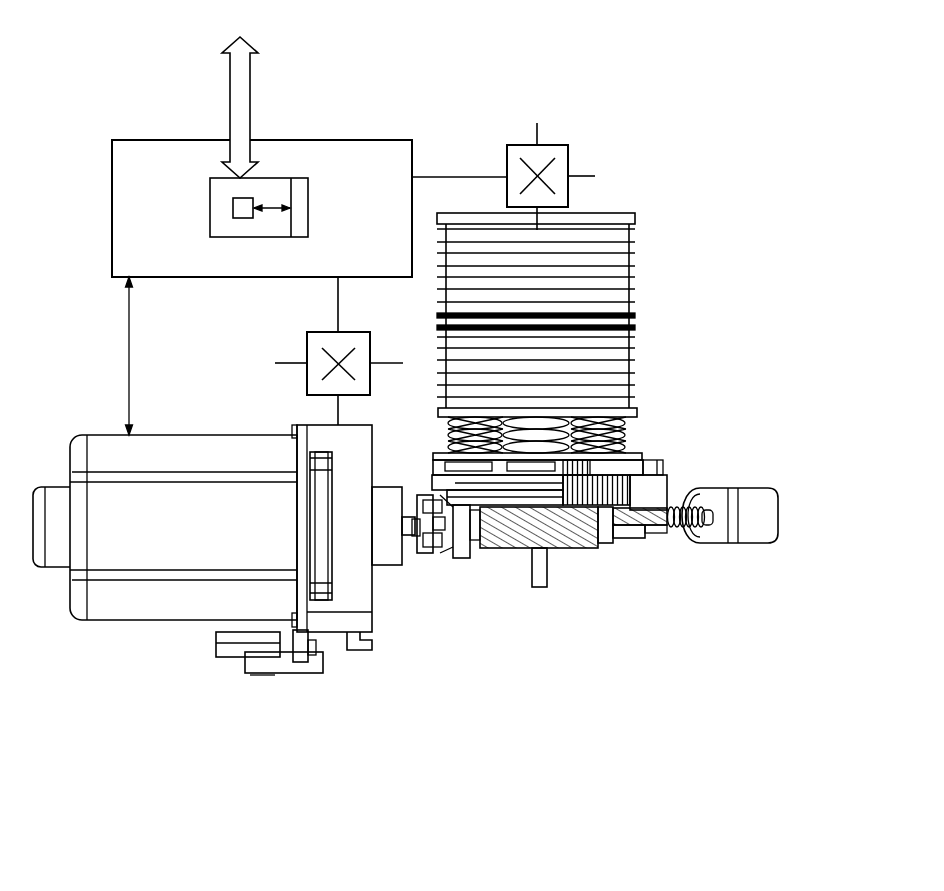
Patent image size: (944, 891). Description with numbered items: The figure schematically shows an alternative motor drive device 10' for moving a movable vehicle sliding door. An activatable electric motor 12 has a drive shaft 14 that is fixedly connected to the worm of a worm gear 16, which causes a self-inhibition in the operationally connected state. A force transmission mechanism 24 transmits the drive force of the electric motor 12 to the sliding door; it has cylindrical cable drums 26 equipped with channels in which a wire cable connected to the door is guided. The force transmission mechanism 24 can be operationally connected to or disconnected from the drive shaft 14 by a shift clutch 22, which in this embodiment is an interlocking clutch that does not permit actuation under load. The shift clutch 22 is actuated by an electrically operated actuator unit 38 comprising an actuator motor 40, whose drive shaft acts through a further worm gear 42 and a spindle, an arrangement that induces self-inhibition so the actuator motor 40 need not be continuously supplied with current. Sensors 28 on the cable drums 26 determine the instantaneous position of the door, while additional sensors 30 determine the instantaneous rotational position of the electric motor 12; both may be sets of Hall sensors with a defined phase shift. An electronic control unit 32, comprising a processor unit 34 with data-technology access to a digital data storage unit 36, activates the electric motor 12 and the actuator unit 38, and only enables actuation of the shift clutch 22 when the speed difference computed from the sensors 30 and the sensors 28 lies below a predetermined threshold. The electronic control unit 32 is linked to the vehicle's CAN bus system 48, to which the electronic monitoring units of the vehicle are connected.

The alternative motor drive device 10' is at (450, 402).
The electric motor 12 is at (136, 628).
The drive shaft 14 is at (405, 535).
The worm gear 16 is at (565, 595).
The shift clutch 22 is at (672, 441).
The force transmission mechanism 24 is at (590, 301).
The cable drums 26 is at (635, 313).
The sensors 28 is at (507, 147).
The sensors 30 is at (307, 375).
The electronic control unit 32 is at (180, 137).
The processor unit 34 is at (243, 217).
The digital data storage unit 36 is at (300, 180).
The actuator unit 38 is at (703, 598).
The actuator motor 40 is at (718, 535).
The further worm gear 42 is at (676, 552).
The controller area network (CAN) bus system 48 is at (240, 110).